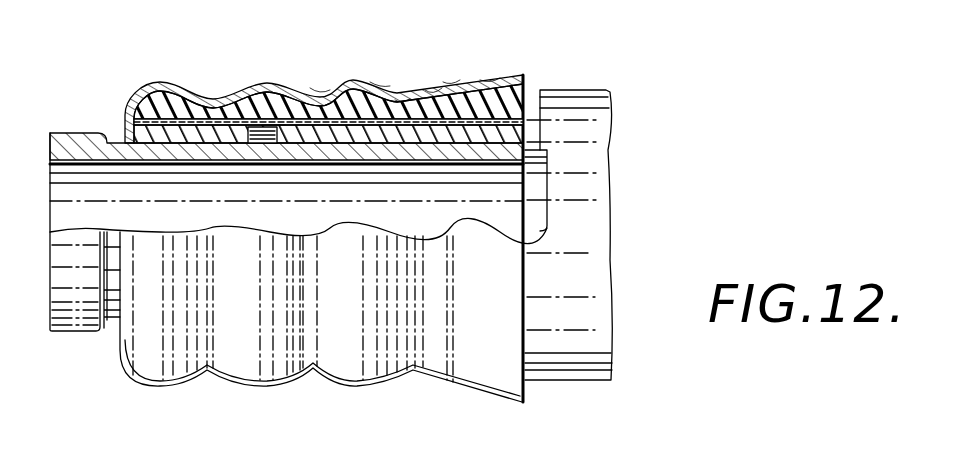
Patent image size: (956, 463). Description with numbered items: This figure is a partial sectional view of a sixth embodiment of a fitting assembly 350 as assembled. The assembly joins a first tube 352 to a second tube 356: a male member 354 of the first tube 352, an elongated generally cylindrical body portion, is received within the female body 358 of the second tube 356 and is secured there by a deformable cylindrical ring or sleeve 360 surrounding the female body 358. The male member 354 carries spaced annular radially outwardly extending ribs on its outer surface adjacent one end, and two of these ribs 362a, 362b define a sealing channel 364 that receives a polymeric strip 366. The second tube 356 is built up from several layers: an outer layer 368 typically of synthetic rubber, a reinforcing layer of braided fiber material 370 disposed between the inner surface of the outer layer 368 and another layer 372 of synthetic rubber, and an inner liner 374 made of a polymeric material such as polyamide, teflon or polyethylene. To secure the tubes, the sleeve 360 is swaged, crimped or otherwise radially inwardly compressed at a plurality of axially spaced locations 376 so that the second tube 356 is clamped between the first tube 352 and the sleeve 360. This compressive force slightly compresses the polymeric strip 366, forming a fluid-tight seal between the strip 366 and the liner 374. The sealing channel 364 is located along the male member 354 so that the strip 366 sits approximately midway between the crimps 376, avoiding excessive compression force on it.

The fitting assembly 350 is at (348, 207).
The first tube 352 is at (77, 132).
The male member 354 is at (170, 80).
The second tube 356 is at (607, 88).
The female body 358 is at (378, 90).
The sleeve 360 is at (490, 80).
The rib 362a is at (242, 93).
The rib 362b is at (296, 110).
The sealing channel 364 is at (260, 143).
The polymeric strip 366 is at (272, 126).
The outer layer 368 is at (451, 82).
The braided fiber material 370 is at (433, 92).
The layer of synthetic rubber material 372 is at (401, 97).
The inner liner 374 is at (390, 140).
The axially spaced locations 376 is at (320, 93).